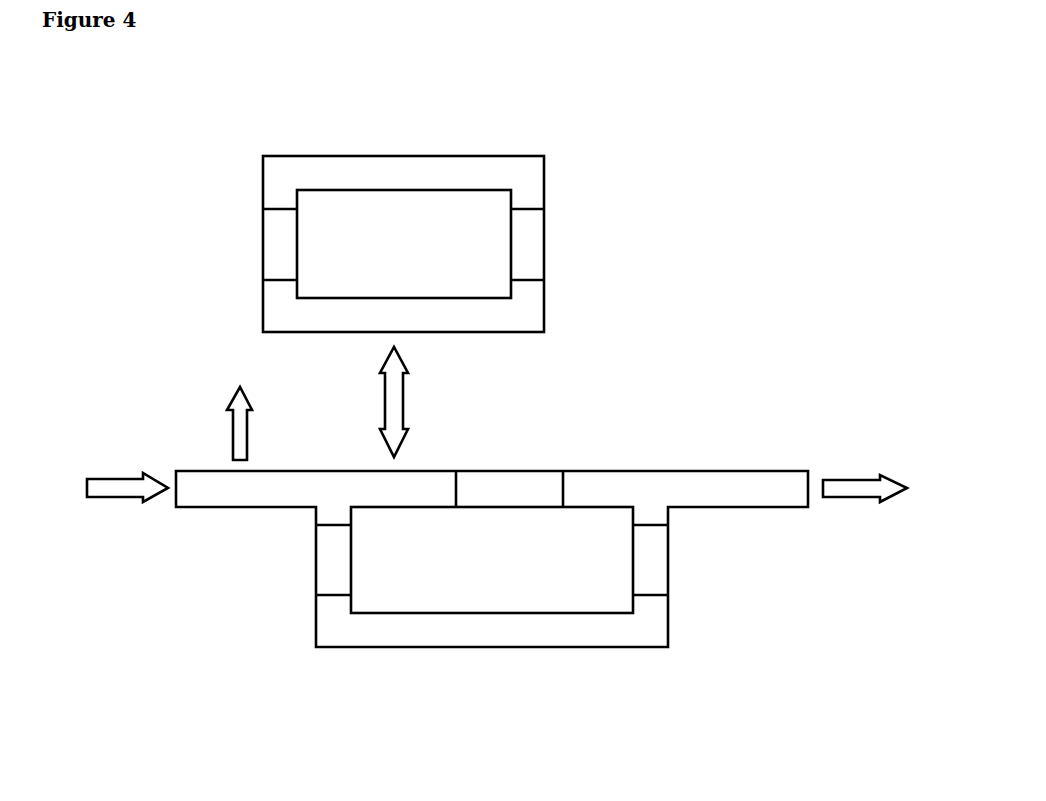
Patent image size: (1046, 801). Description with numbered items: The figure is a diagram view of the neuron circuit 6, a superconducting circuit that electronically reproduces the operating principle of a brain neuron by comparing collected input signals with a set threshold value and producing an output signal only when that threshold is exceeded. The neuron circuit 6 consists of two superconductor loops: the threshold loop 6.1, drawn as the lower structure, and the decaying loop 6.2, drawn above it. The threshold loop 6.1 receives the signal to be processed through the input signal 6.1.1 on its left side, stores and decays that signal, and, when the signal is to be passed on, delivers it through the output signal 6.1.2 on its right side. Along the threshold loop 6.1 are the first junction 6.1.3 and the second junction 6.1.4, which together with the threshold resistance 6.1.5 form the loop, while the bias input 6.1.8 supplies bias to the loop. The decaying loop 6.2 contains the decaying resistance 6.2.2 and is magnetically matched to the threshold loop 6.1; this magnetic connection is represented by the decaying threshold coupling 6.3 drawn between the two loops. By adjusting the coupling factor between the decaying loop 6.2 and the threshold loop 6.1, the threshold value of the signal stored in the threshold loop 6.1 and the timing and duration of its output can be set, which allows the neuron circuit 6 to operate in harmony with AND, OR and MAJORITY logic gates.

The neuron circuit 6 is at (180, 114).
The threshold loop 6.1 is at (742, 439).
The input signal 6.1.1 is at (130, 488).
The output signal 6.1.2 is at (858, 482).
The first junction 6.1.3 is at (323, 563).
The second junction 6.1.4 is at (653, 554).
The threshold resistance 6.1.5 is at (515, 487).
The bias input 6.1.8 is at (237, 429).
The decaying loop 6.2 is at (567, 144).
The decaying resistance 6.2.2 is at (537, 230).
The decaying threshold coupling 6.3 is at (416, 391).